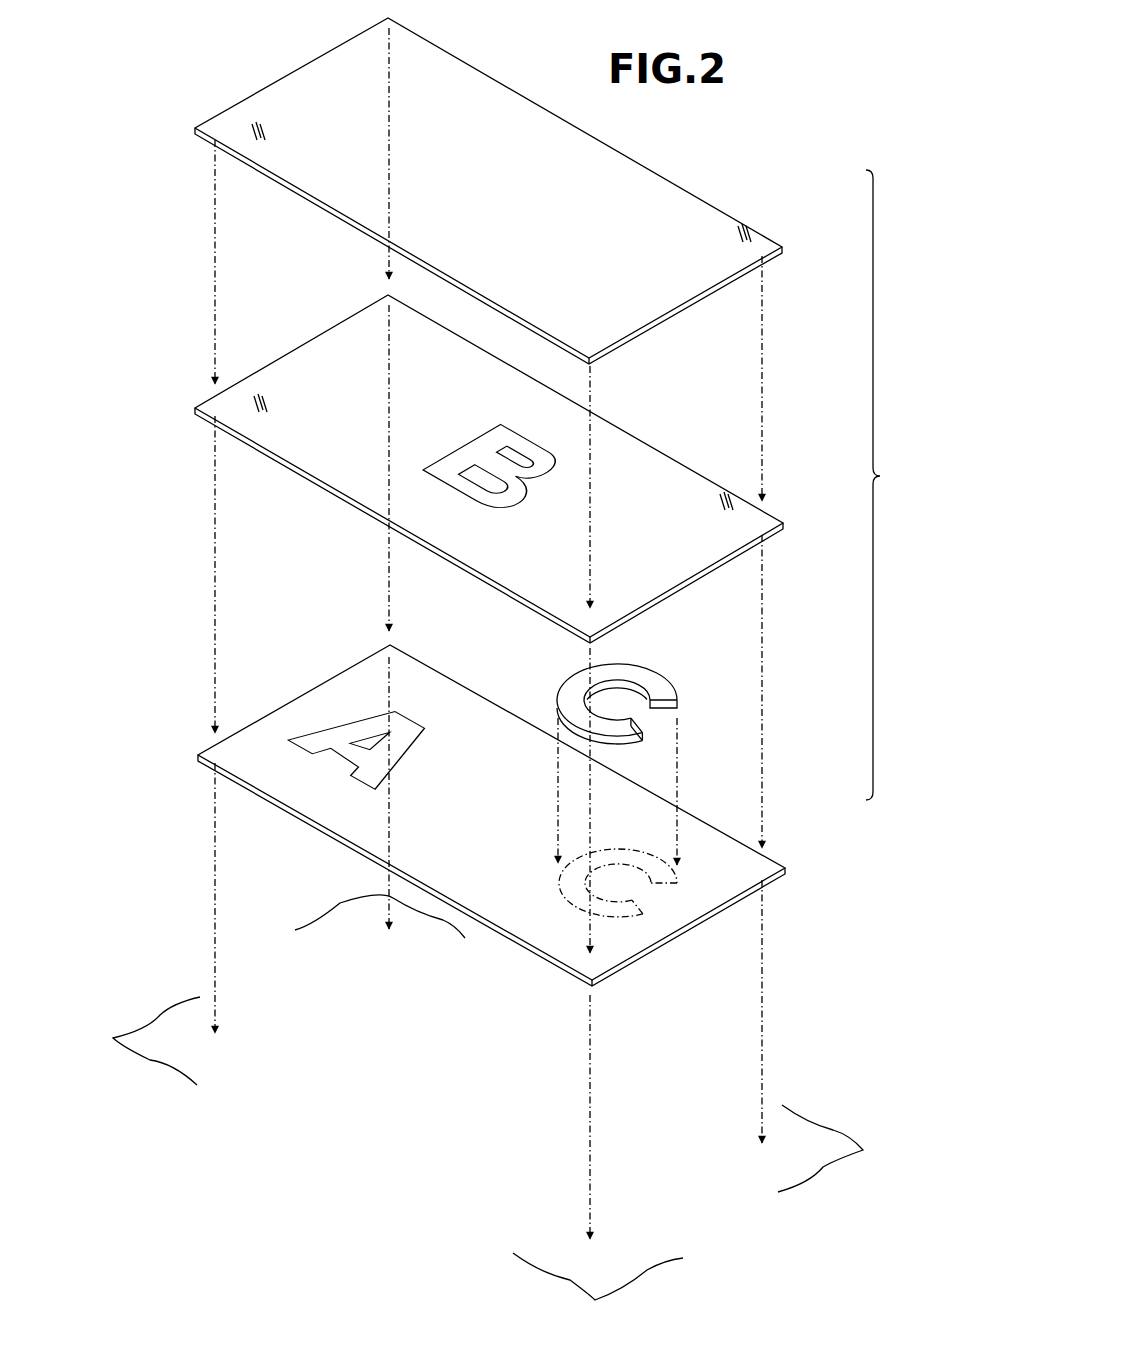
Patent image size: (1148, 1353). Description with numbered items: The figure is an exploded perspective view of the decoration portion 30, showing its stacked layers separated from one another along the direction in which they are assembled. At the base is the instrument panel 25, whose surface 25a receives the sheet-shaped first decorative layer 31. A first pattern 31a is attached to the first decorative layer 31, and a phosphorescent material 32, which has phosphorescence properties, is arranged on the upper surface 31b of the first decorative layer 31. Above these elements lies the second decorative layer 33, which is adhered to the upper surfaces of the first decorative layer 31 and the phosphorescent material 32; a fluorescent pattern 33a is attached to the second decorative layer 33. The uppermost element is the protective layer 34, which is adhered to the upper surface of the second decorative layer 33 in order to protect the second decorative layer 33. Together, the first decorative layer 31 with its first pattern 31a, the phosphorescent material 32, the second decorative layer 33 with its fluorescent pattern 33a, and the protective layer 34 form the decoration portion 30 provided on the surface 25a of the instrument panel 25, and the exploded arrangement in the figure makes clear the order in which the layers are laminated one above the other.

The protective layer 34 is at (747, 238).
The second decorative layer 33 is at (528, 469).
The fluorescent pattern 33a is at (457, 443).
The phosphorescent material 32 is at (655, 683).
The first decorative layer 31 is at (530, 817).
The first pattern 31a is at (357, 722).
The upper surface 31b is at (515, 900).
The decoration portion 30 is at (890, 485).
The instrument panel 25 is at (170, 1002).
The surface 25a is at (353, 1067).